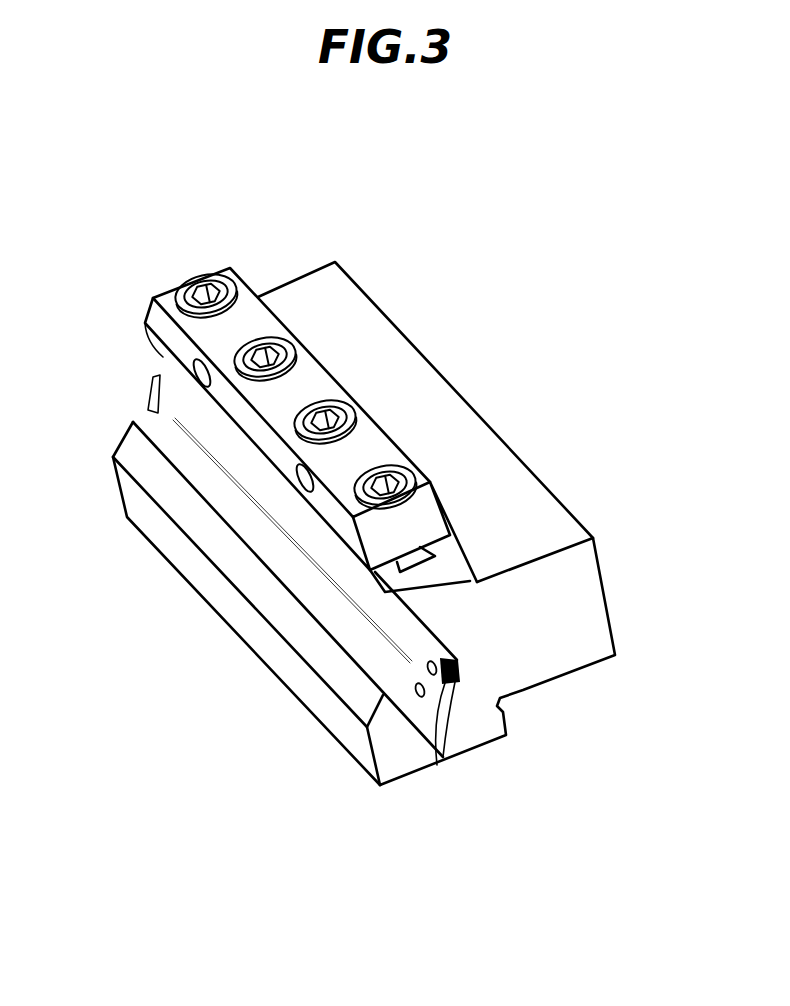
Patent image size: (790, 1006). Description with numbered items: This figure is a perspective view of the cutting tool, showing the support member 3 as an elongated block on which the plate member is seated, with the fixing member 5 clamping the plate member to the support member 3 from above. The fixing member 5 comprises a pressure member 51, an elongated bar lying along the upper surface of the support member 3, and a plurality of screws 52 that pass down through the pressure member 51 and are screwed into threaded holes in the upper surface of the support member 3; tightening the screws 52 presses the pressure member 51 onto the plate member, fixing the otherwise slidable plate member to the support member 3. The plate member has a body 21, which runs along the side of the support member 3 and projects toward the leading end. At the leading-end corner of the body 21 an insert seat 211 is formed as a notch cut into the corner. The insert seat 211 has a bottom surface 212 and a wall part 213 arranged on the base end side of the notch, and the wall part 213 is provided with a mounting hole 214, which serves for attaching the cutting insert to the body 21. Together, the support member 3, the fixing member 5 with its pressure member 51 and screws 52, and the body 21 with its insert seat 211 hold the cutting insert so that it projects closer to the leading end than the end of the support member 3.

The support member 3 is at (470, 398).
The fixing member 5 is at (315, 384).
The pressure member 51 is at (245, 282).
The screws 52 is at (198, 275).
The body 21 is at (345, 605).
The insert seat 211 is at (455, 660).
The bottom surface 212 is at (450, 700).
The wall part 213 is at (450, 675).
The mounting hole 214 is at (470, 683).